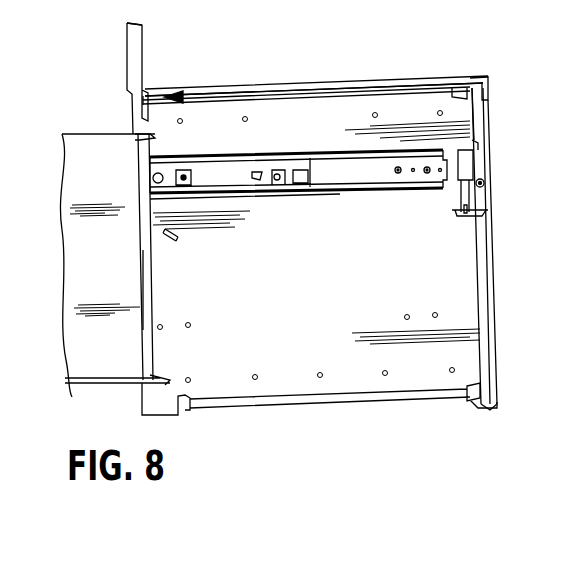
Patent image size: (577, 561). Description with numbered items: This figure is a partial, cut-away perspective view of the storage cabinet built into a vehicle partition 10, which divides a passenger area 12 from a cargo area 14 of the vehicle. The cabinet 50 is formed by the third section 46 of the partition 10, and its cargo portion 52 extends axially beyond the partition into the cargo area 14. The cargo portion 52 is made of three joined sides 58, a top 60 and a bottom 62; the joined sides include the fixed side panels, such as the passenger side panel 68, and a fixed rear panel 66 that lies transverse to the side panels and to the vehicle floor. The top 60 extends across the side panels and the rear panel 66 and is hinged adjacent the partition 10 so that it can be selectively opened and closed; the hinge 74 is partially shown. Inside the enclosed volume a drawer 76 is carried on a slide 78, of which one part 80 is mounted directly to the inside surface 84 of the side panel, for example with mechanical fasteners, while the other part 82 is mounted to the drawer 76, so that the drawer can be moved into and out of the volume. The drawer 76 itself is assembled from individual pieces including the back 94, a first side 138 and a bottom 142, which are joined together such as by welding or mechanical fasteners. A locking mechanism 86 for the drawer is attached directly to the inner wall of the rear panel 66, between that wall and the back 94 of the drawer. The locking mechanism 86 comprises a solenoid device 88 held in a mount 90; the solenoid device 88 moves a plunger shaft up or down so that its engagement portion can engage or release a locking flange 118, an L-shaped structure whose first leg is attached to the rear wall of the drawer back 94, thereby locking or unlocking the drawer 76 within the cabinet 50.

The vehicle partition 10 is at (133, 38).
The passenger area 12 is at (92, 66).
The cargo area 14 is at (320, 46).
The third section 46 is at (135, 57).
The cabinet 50 is at (237, 90).
The cargo portion 52 is at (457, 63).
The three joined sides 58 is at (480, 118).
The top 60 is at (344, 83).
The bottom 62 is at (280, 400).
The rear panel 66 is at (492, 271).
The passenger side panel 68 is at (399, 104).
The hinge 74 is at (181, 94).
The drawer 76 is at (80, 145).
The slide 78 is at (168, 171).
The slide part mounted to side panel 80 is at (212, 166).
The slide part mounted to drawer 82 is at (327, 171).
The inside surface 84 is at (274, 106).
The locking mechanism 86 is at (196, 234).
The solenoid device 88 is at (470, 164).
The mount 90 is at (485, 184).
The back 94 is at (153, 285).
The locking flange 118 is at (166, 219).
The first side 138 is at (100, 152).
The bottom 142 is at (112, 380).